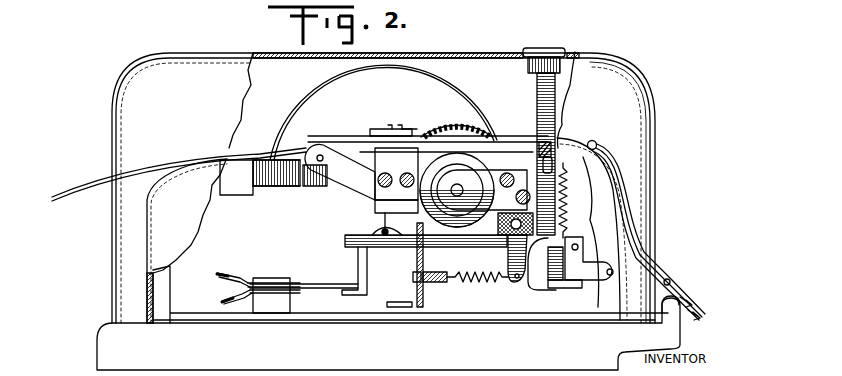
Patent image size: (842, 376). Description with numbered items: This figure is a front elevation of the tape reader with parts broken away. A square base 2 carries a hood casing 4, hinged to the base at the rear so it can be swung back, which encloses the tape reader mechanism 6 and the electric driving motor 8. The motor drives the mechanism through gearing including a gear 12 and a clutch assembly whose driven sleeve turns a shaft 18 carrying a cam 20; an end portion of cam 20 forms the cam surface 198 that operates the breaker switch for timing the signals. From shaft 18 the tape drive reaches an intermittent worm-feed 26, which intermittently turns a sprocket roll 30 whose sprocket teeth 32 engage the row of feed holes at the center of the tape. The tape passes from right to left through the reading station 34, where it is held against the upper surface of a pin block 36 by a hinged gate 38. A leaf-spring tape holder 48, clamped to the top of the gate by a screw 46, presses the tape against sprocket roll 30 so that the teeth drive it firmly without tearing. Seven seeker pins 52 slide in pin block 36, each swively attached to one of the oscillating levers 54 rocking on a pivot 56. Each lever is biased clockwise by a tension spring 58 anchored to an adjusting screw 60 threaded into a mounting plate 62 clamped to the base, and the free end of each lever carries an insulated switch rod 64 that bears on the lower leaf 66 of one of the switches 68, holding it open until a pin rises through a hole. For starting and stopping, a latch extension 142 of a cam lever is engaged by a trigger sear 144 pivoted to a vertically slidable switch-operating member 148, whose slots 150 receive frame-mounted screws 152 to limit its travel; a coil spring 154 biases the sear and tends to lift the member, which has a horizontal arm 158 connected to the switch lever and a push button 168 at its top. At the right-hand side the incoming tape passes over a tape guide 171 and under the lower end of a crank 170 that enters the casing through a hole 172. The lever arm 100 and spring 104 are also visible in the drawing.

The square base 2 is at (110, 343).
The hood casing 4 is at (160, 78).
The tape reader mechanism 6 is at (272, 117).
The electric driving motor 8 is at (333, 96).
The gear 12 is at (468, 127).
The shaft 18 is at (455, 186).
The cam 20 is at (483, 178).
The intermittent worm-feed 26 is at (322, 197).
The sprocket roll 30 is at (319, 150).
The sprocket teeth 32 is at (340, 172).
The reading station 34 is at (381, 118).
The pin block 36 is at (376, 205).
The hinged gate 38 is at (412, 135).
The screw 46 is at (394, 129).
The leaf-spring tape holder 48 is at (360, 137).
The seeker pins 52 is at (382, 224).
The oscillating levers 54 is at (412, 246).
The pivot 56 is at (506, 244).
The tension spring 58 is at (480, 284).
The adjusting screw 60 is at (433, 283).
The mounting plate 62 is at (418, 289).
The insulated switch rod 64 is at (357, 252).
The lower leaf 66 is at (333, 294).
The switches 68 is at (273, 276).
The lever arm 100 is at (232, 188).
The coil spring 104 is at (279, 188).
The latch extension 142 is at (553, 276).
The trigger sear 144 is at (568, 290).
The switch-operating member 148 is at (541, 114).
The slots 150 is at (545, 160).
The screws 152 is at (542, 140).
The coil spring 154 is at (566, 152).
The horizontal arm 158 is at (596, 276).
The push button 168 is at (550, 48).
The crank 170 is at (664, 264).
The tape guide 171 is at (674, 311).
The hole 172 is at (597, 144).
The cam surface 198 is at (475, 175).